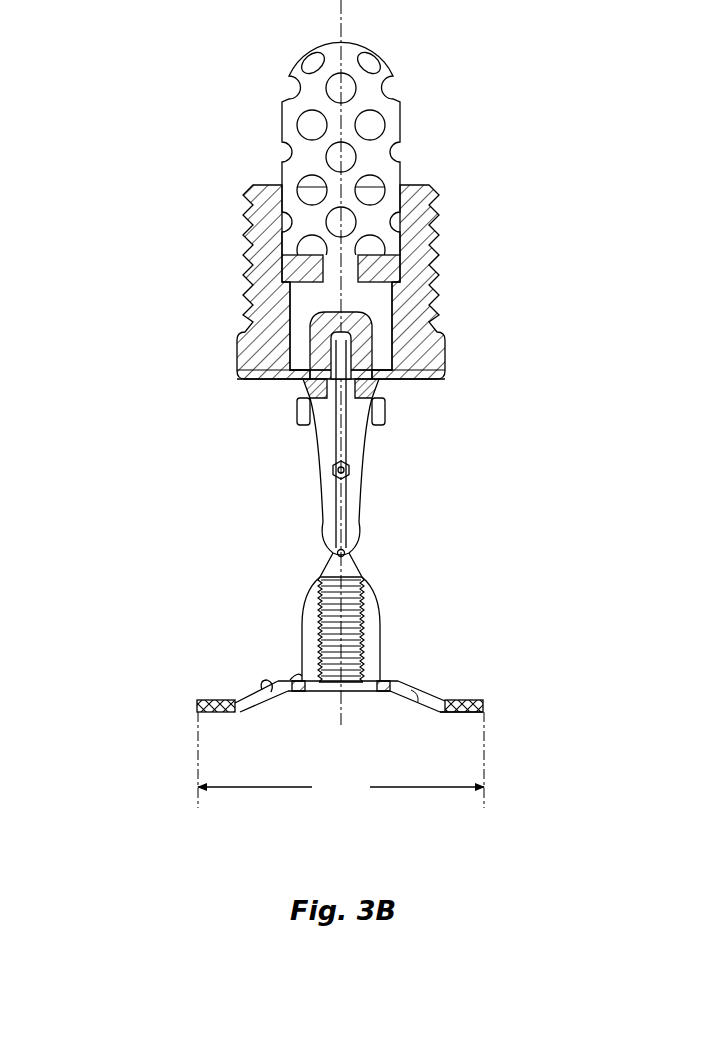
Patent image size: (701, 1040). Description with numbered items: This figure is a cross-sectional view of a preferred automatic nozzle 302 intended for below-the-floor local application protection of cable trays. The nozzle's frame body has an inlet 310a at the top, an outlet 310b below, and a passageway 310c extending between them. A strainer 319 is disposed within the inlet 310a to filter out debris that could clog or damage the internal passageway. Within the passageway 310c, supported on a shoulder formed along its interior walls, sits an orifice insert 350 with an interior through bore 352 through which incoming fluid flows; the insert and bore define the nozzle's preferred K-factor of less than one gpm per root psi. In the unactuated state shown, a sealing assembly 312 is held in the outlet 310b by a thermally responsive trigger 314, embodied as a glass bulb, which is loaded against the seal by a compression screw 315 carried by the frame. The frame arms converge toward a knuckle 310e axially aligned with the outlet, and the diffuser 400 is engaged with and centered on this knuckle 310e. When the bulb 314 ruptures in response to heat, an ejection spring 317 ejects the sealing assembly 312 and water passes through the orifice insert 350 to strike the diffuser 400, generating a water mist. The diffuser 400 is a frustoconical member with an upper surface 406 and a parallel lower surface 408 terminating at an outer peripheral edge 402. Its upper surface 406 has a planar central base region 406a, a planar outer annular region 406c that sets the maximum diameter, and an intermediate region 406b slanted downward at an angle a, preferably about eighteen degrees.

The automatic nozzle 302 is at (320, 405).
The strainer 319 is at (307, 84).
The inlet 310a is at (272, 170).
The orifice insert 350 is at (282, 266).
The passageway 310c is at (303, 301).
The through bore 352 is at (356, 291).
The seal assembly 312 is at (390, 381).
The ejection spring 317 is at (380, 399).
The outlet 310b is at (275, 402).
The thermally responsive trigger 314 is at (323, 501).
The compression screw 315 is at (318, 626).
The knuckle 310e is at (380, 651).
The diffuser 400 is at (320, 705).
The upper surface 406 is at (465, 701).
The central base region 406a is at (293, 679).
The intermediate region 406b is at (266, 690).
The outer annular region 406c is at (205, 701).
The outer peripheral edge 402 is at (487, 706).
The lower surface 408 is at (455, 713).
The downward angle a is at (413, 692).